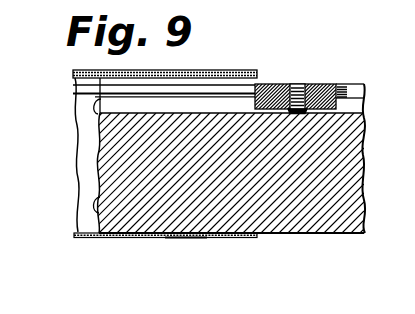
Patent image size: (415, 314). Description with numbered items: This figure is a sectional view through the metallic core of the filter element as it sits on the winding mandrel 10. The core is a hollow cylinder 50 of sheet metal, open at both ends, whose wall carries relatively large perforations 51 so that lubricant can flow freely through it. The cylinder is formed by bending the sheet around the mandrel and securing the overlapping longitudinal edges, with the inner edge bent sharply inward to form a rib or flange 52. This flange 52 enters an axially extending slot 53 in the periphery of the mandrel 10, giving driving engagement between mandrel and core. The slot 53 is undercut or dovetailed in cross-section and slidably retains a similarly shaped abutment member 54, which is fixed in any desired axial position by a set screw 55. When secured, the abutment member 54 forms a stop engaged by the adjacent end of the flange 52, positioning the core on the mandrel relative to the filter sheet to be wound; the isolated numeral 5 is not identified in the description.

The mandrel 10 is at (298, 212).
The hollow cylinder 50 is at (130, 236).
The perforations 51 is at (207, 236).
The rib or flange 52 is at (80, 85).
The axially extending slot 53 is at (128, 110).
The abutment member 54 is at (323, 98).
The set screw 55 is at (298, 85).
The element 5 is at (414, 255).